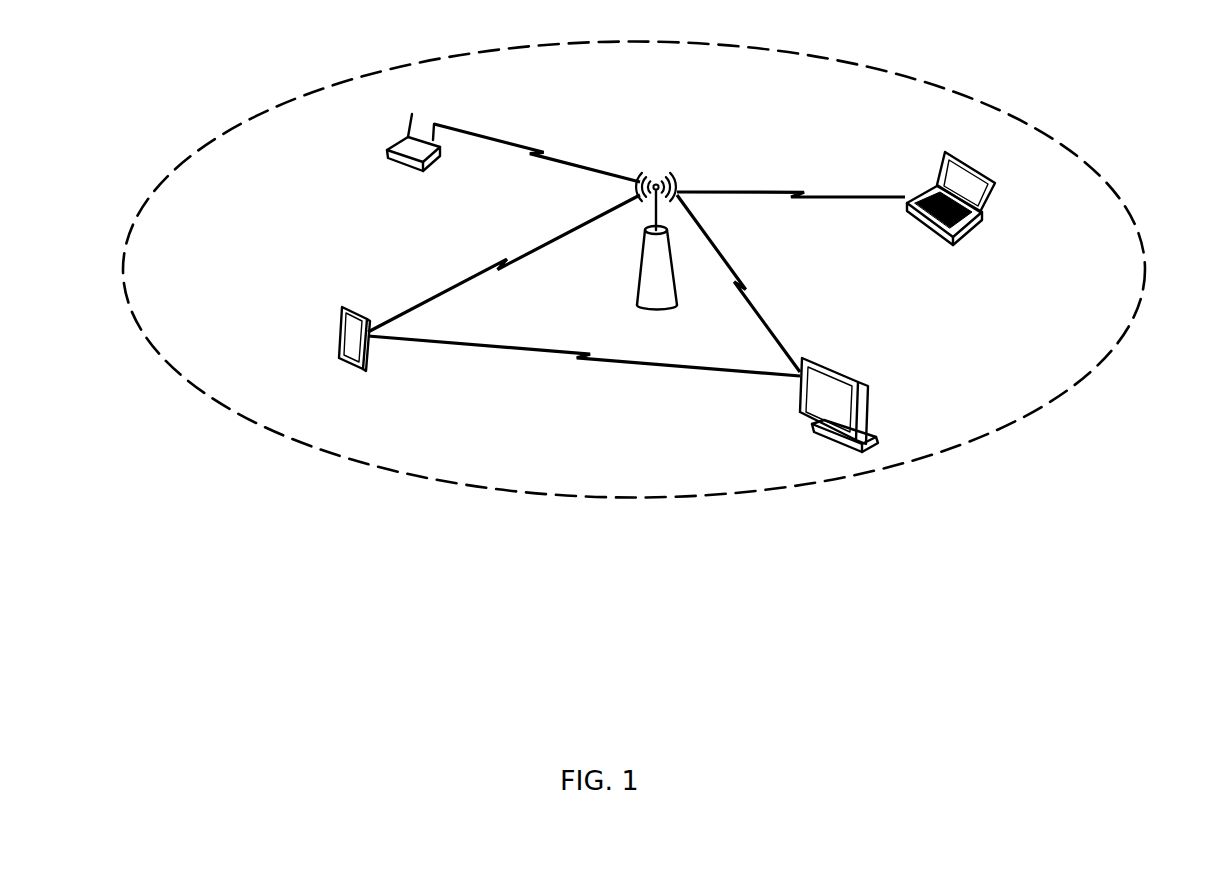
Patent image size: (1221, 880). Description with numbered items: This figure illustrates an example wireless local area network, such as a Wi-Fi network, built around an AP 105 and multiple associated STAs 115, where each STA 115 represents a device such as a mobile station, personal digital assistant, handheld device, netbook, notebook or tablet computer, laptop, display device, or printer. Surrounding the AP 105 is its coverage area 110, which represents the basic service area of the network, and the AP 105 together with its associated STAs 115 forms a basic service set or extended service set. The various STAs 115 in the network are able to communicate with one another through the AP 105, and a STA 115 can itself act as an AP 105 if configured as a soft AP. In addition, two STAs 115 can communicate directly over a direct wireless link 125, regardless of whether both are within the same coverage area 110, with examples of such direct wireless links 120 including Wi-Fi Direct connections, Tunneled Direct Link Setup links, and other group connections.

The AP 105 is at (642, 270).
The coverage area 110 is at (628, 499).
The STA 115 is at (392, 160).
The direct wireless link 120 is at (523, 142).
The direct wireless link 125 is at (612, 367).